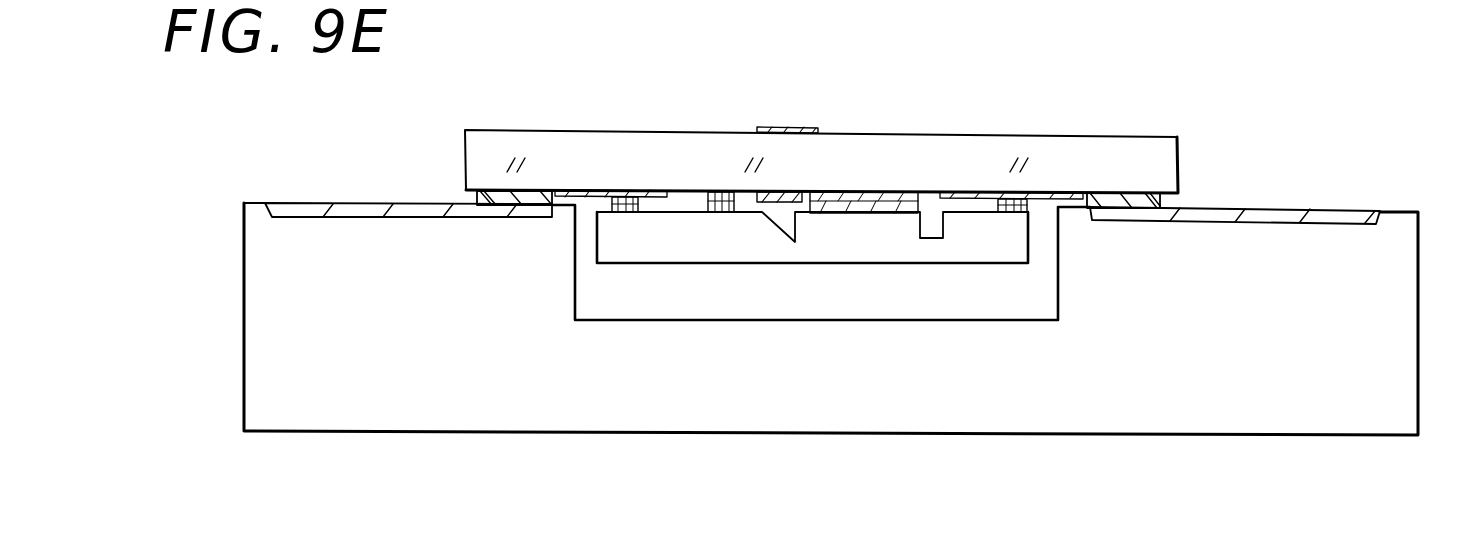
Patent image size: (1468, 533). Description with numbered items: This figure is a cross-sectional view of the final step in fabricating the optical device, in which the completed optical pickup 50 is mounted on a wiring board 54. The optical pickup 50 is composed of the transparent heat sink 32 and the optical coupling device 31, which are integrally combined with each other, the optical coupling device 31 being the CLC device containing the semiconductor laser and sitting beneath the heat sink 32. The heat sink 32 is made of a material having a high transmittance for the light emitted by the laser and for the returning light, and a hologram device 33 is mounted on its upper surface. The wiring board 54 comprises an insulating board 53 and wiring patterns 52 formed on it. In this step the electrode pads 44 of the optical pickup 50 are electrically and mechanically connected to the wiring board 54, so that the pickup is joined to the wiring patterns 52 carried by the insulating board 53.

The optical coupling device 31 is at (832, 241).
The heat sink 32 is at (1159, 147).
The hologram device 33 is at (781, 126).
The electrode pads 44 is at (470, 200).
The optical pickup 50 is at (1042, 86).
The wiring patterns 52 is at (1318, 208).
The insulating board 53 is at (1393, 252).
The wiring board 54 is at (1312, 154).